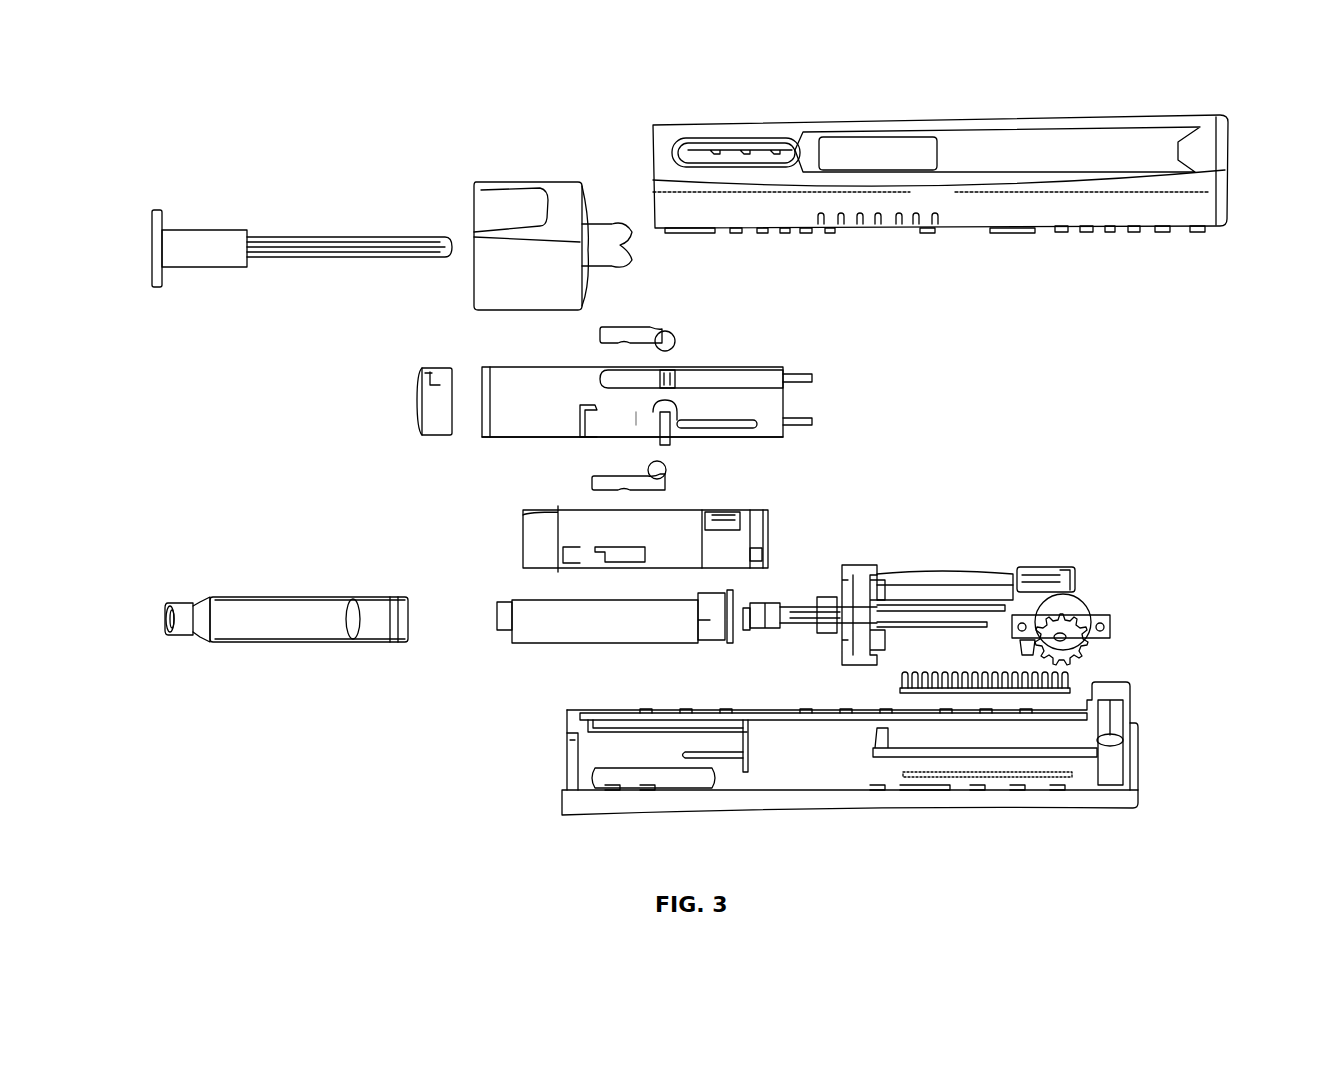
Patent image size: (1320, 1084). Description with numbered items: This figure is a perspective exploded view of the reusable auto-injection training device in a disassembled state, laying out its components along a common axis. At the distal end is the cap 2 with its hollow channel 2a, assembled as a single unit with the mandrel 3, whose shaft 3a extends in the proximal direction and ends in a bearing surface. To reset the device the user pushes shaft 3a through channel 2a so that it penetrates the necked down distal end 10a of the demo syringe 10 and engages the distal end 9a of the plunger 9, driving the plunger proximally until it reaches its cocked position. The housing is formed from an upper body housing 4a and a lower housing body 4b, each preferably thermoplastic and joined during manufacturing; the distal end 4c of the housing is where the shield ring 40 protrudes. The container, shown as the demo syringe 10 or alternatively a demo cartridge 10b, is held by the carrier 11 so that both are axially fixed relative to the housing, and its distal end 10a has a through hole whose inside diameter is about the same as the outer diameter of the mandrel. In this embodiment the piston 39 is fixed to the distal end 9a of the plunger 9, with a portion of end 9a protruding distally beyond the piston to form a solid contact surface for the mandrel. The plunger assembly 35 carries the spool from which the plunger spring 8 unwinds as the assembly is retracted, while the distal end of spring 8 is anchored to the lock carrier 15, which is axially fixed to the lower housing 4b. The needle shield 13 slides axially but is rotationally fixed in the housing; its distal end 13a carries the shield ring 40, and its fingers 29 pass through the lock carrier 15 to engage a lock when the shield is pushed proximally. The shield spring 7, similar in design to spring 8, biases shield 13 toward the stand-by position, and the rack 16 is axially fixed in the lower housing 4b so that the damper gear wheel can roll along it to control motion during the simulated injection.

The cap 2 is at (503, 202).
The hollow channel 2a is at (620, 238).
The mandrel 3 is at (190, 262).
The shaft 3a is at (292, 248).
The upper body housing 4a is at (1055, 155).
The lower housing body 4b is at (780, 740).
The distal end of housing 4c is at (560, 800).
The shield spring 7 is at (638, 333).
The plunger spring 8 is at (972, 582).
The plunger 9 is at (906, 612).
The distal end of plunger 9a is at (750, 632).
The demo syringe 10 is at (580, 625).
The necked down distal end 10a is at (258, 596).
The demo cartridge 10b is at (370, 630).
The carrier 11 is at (672, 535).
The needle shield 13 is at (705, 398).
The distal end of shield 13a is at (508, 430).
The lock carrier 15 is at (847, 575).
The rack 16 is at (1075, 682).
The fingers 29 is at (795, 372).
The plunger assembly 35 is at (1032, 572).
The piston 39 is at (773, 600).
The shield ring 40 is at (435, 427).